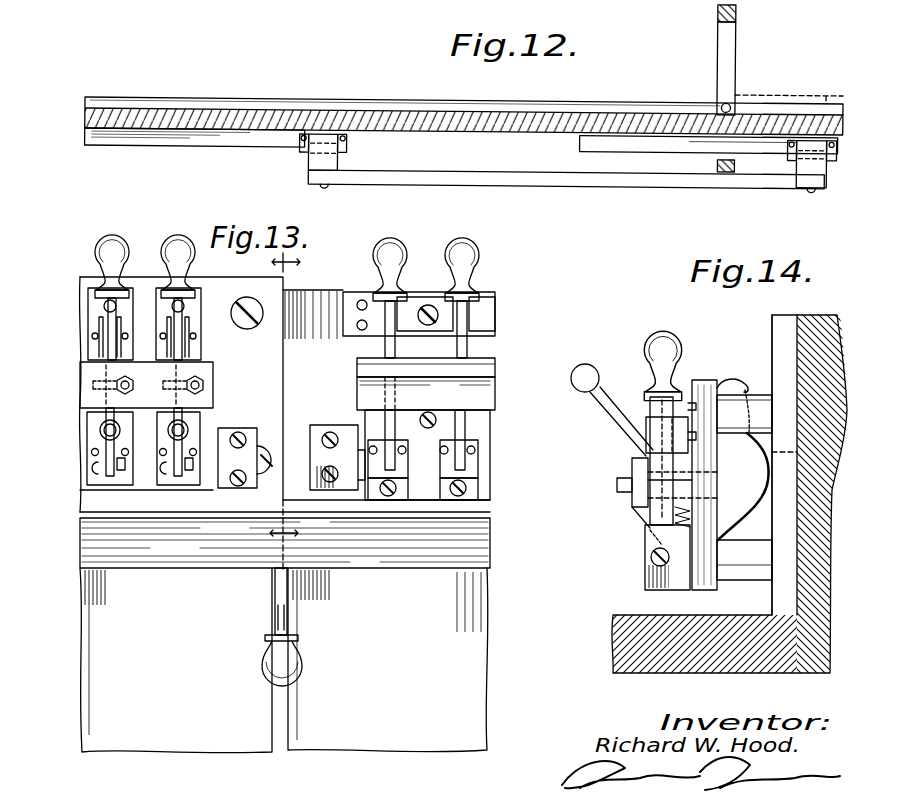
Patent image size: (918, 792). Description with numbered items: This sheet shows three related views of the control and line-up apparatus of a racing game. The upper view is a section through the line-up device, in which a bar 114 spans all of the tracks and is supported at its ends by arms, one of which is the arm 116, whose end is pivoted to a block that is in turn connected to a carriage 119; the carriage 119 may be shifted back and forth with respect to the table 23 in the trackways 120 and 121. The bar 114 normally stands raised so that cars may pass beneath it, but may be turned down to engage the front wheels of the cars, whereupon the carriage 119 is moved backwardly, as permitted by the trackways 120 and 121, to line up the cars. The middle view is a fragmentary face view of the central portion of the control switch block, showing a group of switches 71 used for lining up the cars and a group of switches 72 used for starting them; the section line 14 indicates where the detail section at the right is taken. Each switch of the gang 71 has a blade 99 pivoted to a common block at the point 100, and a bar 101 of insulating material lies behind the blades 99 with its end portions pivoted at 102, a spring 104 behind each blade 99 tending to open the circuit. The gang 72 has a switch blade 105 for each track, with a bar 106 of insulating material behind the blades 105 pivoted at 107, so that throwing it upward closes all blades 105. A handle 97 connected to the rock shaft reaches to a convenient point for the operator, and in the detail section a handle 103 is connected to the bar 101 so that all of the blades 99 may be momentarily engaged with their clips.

In FIG. 12, the table 23 is at (247, 107).
In FIG. 12, the trackway 120 is at (266, 133).
In FIG. 12, the trackway 121 is at (670, 140).
In FIG. 12, the carriage 119 is at (713, 168).
In FIG. 12, the bar 114 is at (736, 4).
In FIG. 12, the arm 116 is at (730, 60).
In FIG. 13, the group of switches 71 is at (140, 236).
In FIG. 13, the group of switches 72 is at (496, 255).
In FIG. 13, the blade 99 is at (110, 313).
In FIG. 14, the blade 99 is at (652, 344).
In FIG. 13, the bar of insulating material 101 is at (205, 383).
In FIG. 14, the bar of insulating material 101 is at (640, 472).
In FIG. 13, the pivot 102 is at (218, 450).
In FIG. 14, the pivot 102 is at (652, 562).
In FIG. 13, the spring 104 is at (132, 462).
In FIG. 13, the pivot point 100 is at (185, 484).
In FIG. 13, the switch blade 105 is at (462, 350).
In FIG. 13, the bar of insulating material 106 is at (478, 393).
In FIG. 13, the pivot 107 is at (350, 436).
In FIG. 13, the handle 97 is at (262, 665).
In FIG. 13, the section line 14 is at (296, 405).
In FIG. 14, the handle 103 is at (578, 392).